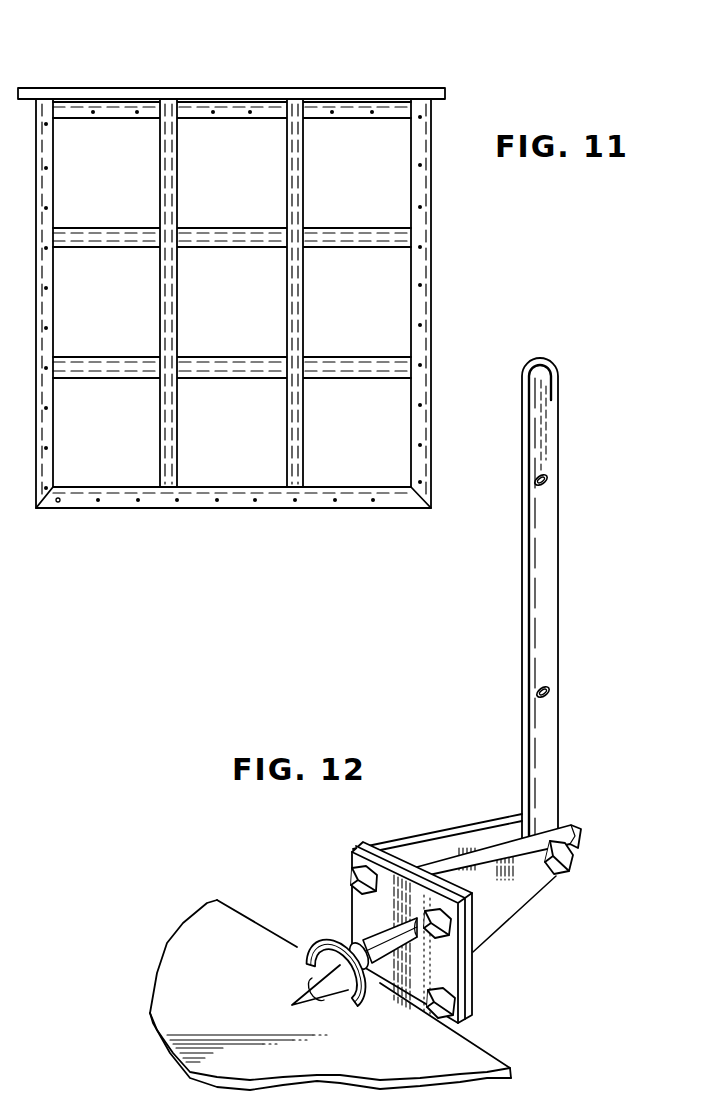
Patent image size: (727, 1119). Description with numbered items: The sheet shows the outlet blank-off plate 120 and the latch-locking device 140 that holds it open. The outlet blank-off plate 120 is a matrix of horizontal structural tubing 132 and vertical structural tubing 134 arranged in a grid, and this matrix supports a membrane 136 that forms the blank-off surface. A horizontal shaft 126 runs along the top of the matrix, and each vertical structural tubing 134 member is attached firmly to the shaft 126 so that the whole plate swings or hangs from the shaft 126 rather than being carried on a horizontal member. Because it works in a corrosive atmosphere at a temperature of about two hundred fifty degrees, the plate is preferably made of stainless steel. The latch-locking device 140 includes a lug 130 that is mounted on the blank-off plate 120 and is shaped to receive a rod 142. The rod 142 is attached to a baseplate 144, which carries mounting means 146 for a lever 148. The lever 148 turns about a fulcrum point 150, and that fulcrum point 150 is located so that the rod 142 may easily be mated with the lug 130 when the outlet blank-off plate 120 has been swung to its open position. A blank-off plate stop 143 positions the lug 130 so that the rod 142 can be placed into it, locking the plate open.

In FIG. 11, the outlet blank-off plate 120 is at (272, 35).
In FIG. 12, the outlet blank-off plate 120 is at (200, 982).
In FIG. 11, the shaft 126 is at (445, 92).
In FIG. 11, the horizontal structural tubing 132 is at (265, 107).
In FIG. 11, the vertical structural tubing 134 is at (160, 183).
In FIG. 11, the membrane 136 is at (255, 316).
In FIG. 12, the latch-locking device 140 is at (445, 685).
In FIG. 12, the lug 130 is at (302, 948).
In FIG. 12, the rod 142 is at (330, 1003).
In FIG. 12, the blank-off plate stop 143 is at (387, 937).
In FIG. 12, the baseplate 144 is at (445, 952).
In FIG. 12, the mounting means 146 is at (525, 888).
In FIG. 12, the lever 148 is at (581, 599).
In FIG. 12, the fulcrum point 150 is at (550, 692).